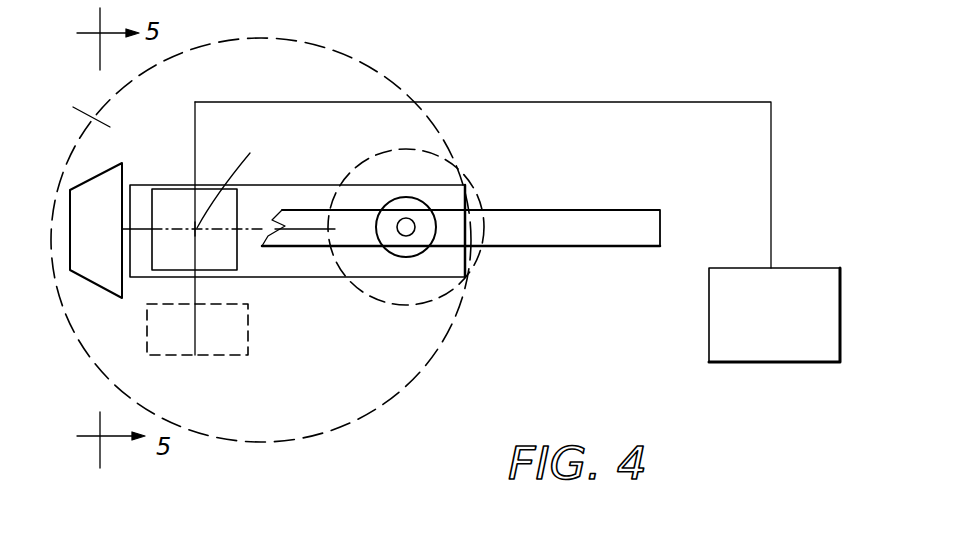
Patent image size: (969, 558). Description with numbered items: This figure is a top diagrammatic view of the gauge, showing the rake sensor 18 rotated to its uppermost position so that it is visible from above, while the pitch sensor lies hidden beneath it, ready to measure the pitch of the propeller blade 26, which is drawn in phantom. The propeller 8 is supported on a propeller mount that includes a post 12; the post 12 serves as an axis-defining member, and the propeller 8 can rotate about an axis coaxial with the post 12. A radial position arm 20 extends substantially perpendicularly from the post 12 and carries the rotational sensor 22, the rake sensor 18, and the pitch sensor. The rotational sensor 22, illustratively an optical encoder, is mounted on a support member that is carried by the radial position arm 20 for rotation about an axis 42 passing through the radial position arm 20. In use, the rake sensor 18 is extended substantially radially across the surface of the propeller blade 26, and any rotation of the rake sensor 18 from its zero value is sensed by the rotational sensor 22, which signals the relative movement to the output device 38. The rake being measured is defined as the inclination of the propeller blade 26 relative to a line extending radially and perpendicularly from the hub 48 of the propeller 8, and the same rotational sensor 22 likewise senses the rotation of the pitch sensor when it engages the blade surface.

The propeller 8 is at (421, 382).
The propeller blade 26 is at (84, 101).
The rake sensor 18 is at (110, 242).
The rotational sensor 22 is at (197, 218).
The axis 42 is at (240, 187).
The radial position arm 20 is at (603, 222).
The post 12 is at (406, 227).
The hub 48 is at (477, 258).
The output device 38 is at (792, 322).